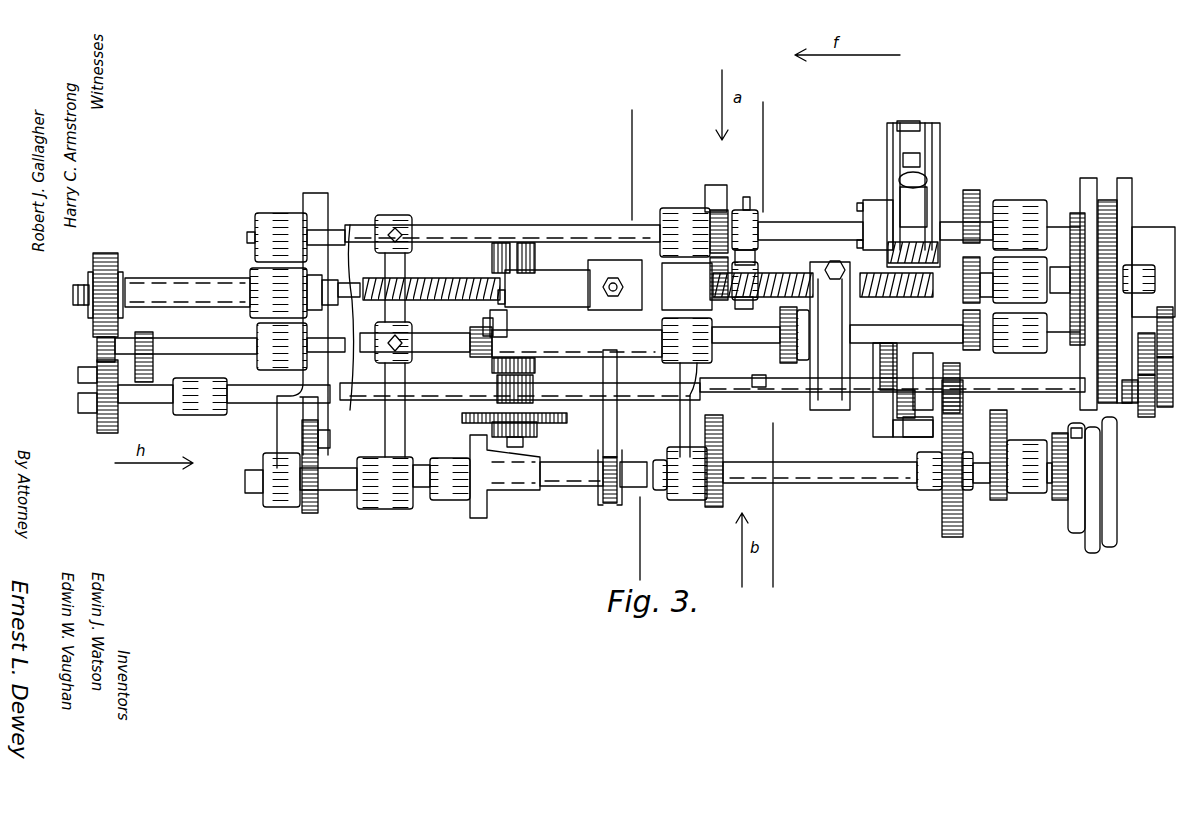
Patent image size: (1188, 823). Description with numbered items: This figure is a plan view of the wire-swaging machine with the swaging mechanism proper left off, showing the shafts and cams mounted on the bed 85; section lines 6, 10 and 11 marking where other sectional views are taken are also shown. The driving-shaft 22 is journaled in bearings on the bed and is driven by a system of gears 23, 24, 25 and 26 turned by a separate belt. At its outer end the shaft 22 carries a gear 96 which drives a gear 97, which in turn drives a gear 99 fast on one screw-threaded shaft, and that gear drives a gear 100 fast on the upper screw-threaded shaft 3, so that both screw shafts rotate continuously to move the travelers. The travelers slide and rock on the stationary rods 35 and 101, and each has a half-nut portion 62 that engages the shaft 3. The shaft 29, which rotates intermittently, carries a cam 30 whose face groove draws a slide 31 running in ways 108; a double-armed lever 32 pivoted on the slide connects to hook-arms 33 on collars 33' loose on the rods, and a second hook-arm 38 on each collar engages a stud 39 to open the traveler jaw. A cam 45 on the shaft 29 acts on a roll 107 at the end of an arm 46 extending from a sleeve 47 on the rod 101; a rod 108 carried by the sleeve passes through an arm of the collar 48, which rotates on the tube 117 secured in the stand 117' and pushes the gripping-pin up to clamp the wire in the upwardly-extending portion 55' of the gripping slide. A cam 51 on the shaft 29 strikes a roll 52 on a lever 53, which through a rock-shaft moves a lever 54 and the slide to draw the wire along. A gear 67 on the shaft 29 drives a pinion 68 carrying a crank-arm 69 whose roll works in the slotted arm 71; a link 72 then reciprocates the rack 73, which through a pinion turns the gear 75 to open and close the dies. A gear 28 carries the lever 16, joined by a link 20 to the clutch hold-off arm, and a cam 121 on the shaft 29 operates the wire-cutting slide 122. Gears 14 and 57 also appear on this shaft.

The screw-threaded shaft 3 is at (72, 296).
The section line 6 6 is at (772, 346).
The section line 10 10 is at (875, 400).
The section line 11 11 is at (763, 335).
The gear 14 is at (960, 536).
The lever 16 is at (921, 355).
The link 20 is at (917, 403).
The driving-shaft 22 is at (78, 401).
The gear 23 is at (1158, 325).
The gear 24 is at (1167, 412).
The gear 25 is at (1148, 343).
The gear 26 is at (1147, 421).
The gear 28 is at (960, 384).
The shaft 29 is at (245, 482).
The cam 30 is at (712, 450).
The slide 31 is at (724, 408).
The double-armed lever 32 is at (812, 273).
The hook-arm 33 is at (764, 275).
The collar 33' is at (759, 269).
The stationary rod 35 is at (438, 228).
The hook-arm 38 is at (745, 210).
The stud 39 is at (860, 215).
The cam 45 is at (603, 501).
The arm 46 is at (603, 421).
The sleeve 47 is at (582, 350).
The collar 48 is at (622, 265).
The cam 51 is at (515, 461).
The roll 52 is at (538, 430).
The lever 53 is at (495, 366).
The lever 54 is at (540, 264).
The upwardly-extending portion 55' is at (560, 310).
The gear 57 is at (1000, 500).
The half-nut portion 62 is at (944, 253).
The gear 67 is at (1058, 433).
The pinion 68 is at (1120, 262).
The crank-arm 69 is at (1072, 510).
The arm 71 is at (1090, 551).
The link 72 is at (1117, 485).
The rack 73 is at (1115, 205).
The gear 75 is at (1075, 213).
The bed 85 is at (247, 243).
The gear 96 is at (102, 433).
The gear 97 is at (78, 375).
The gear 99 is at (97, 348).
The gear 100 is at (108, 254).
The stationary rod 101 is at (243, 353).
The roll 107 is at (490, 322).
The rod 108 is at (488, 335).
The tube 117 is at (561, 254).
The stand 117' is at (687, 286).
The cam 121 is at (309, 515).
The slide 122 is at (331, 409).